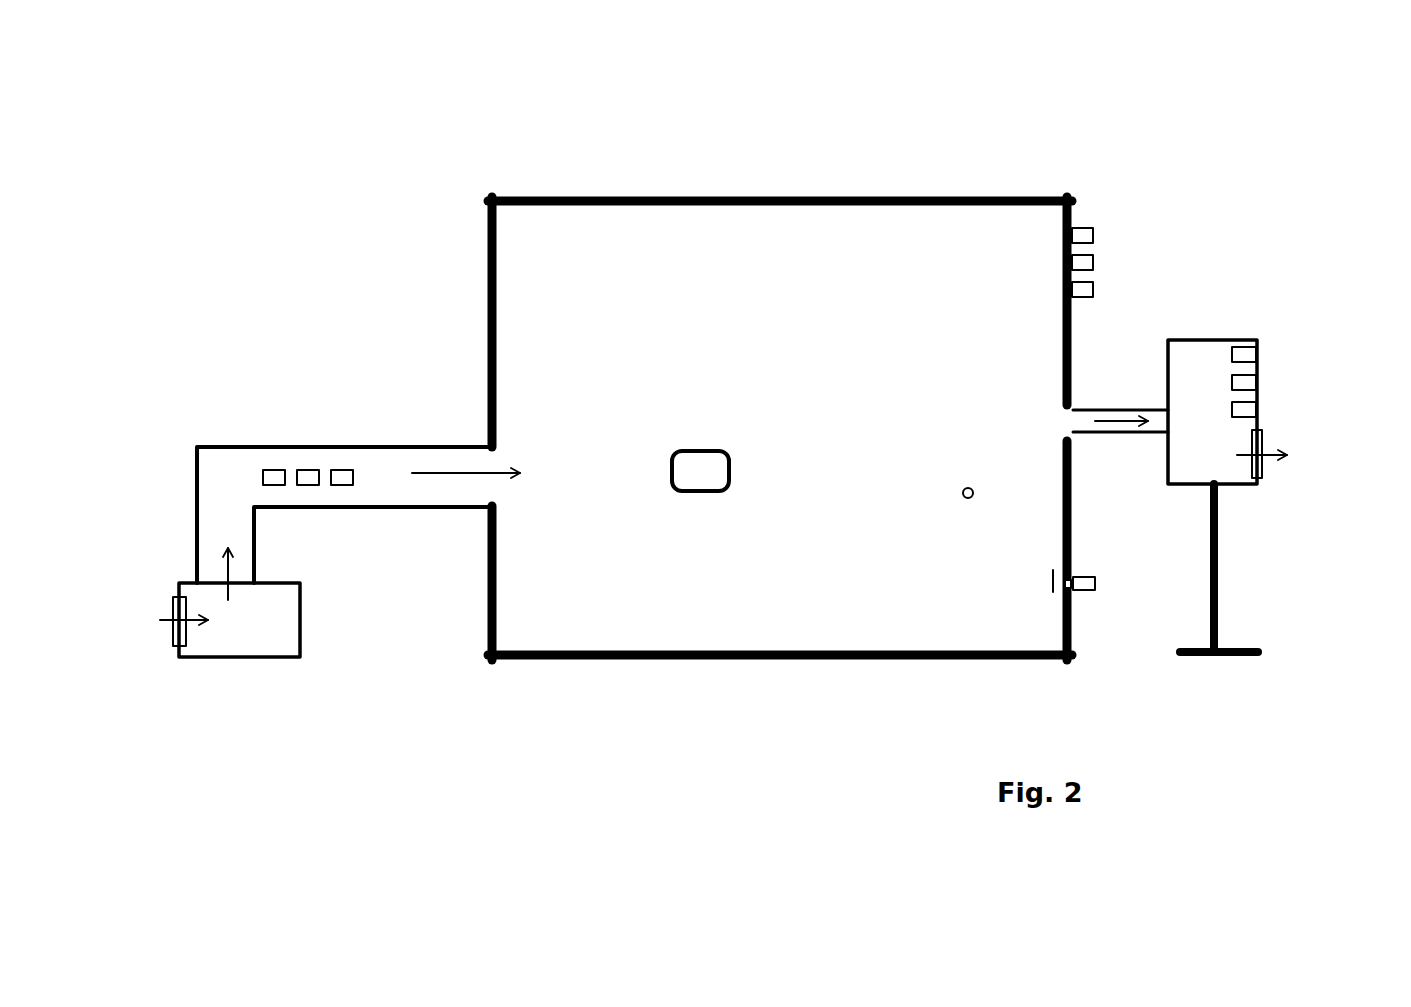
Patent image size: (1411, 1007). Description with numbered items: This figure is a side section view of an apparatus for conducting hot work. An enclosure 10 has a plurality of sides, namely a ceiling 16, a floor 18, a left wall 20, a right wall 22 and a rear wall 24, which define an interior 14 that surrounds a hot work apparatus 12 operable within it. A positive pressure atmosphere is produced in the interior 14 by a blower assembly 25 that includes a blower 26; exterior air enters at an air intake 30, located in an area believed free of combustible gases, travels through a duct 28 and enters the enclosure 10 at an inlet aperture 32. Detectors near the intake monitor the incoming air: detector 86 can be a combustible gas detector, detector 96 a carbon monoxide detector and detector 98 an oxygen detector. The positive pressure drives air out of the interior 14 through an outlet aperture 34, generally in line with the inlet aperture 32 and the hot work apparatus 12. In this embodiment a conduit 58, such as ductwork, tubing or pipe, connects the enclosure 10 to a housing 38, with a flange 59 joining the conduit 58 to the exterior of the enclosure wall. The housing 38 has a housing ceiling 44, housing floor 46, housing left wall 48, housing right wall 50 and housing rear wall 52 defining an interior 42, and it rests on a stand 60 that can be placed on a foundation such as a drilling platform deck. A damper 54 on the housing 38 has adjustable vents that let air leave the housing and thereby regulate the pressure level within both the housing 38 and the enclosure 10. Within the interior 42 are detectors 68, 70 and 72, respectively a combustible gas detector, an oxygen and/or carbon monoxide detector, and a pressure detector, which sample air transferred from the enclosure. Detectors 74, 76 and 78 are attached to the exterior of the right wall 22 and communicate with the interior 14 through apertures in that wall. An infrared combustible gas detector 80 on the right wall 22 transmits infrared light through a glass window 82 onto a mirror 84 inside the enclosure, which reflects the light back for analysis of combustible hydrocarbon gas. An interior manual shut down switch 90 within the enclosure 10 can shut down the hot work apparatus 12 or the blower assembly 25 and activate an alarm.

The enclosure 10 is at (939, 129).
The hot work apparatus 12 is at (695, 477).
The interior 14 is at (760, 432).
The ceiling 16 is at (640, 197).
The floor 18 is at (652, 660).
The left wall 20 is at (487, 271).
The right wall 22 is at (1072, 201).
The rear wall 24 is at (560, 600).
The blower assembly 25 is at (166, 720).
The blower 26 is at (280, 628).
The duct 28 is at (381, 476).
The air intake 30 is at (176, 600).
The inlet aperture 32 is at (480, 462).
The outlet aperture 34 is at (1068, 420).
The housing 38 is at (1299, 532).
The interior 42 is at (1185, 460).
The housing ceiling 44 is at (1256, 277).
The housing floor 46 is at (1235, 490).
The housing left wall 48 is at (1129, 342).
The housing right wall 50 is at (1317, 426).
The housing rear wall 52 is at (1211, 297).
The damper 54 is at (1265, 472).
The conduit 58 is at (1103, 478).
The flange 59 is at (1103, 381).
The stand 60 is at (1220, 622).
The detector 68 is at (1257, 352).
The detector 70 is at (1257, 380).
The detector 72 is at (1257, 408).
The detector 74 is at (1085, 235).
The detector 76 is at (1085, 262).
The detector 78 is at (1085, 289).
The detector 80 is at (1095, 583).
The glass window 82 is at (1062, 588).
The mirror 84 is at (1053, 575).
The detector 86 is at (307, 470).
The interior manual shut down switch 90 is at (965, 498).
The detector 96 is at (270, 470).
The detector 98 is at (342, 470).